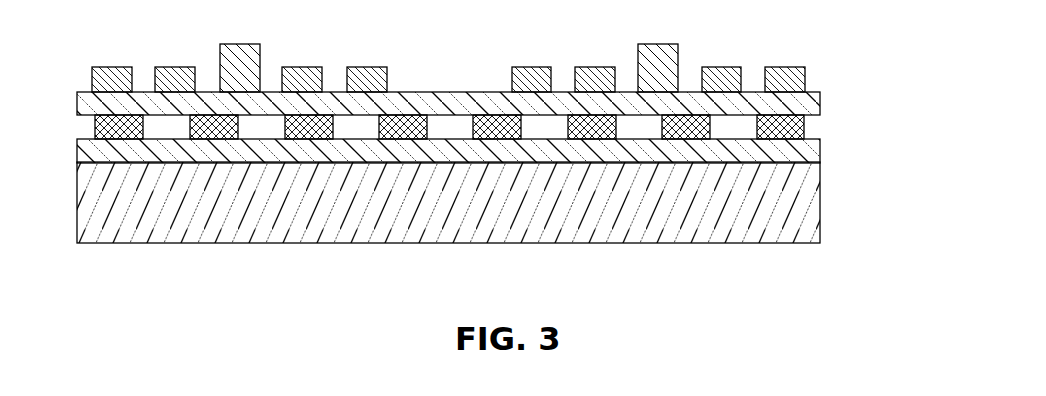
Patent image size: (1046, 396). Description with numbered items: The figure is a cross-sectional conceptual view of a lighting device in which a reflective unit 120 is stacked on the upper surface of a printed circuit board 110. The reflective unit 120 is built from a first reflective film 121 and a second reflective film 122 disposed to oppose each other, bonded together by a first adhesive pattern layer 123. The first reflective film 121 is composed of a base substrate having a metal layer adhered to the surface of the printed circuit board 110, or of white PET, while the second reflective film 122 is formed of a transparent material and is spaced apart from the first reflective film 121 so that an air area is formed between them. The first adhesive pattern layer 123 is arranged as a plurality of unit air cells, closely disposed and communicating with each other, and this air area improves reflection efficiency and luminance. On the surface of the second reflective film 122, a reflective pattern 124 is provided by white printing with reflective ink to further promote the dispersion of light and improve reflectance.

The printed circuit board 110 is at (821, 200).
The reflective unit 120 is at (509, 107).
The first reflective film 121 is at (815, 142).
The second reflective film 122 is at (821, 108).
The first adhesive pattern layer 123 is at (806, 120).
The reflective pattern 124 is at (807, 80).